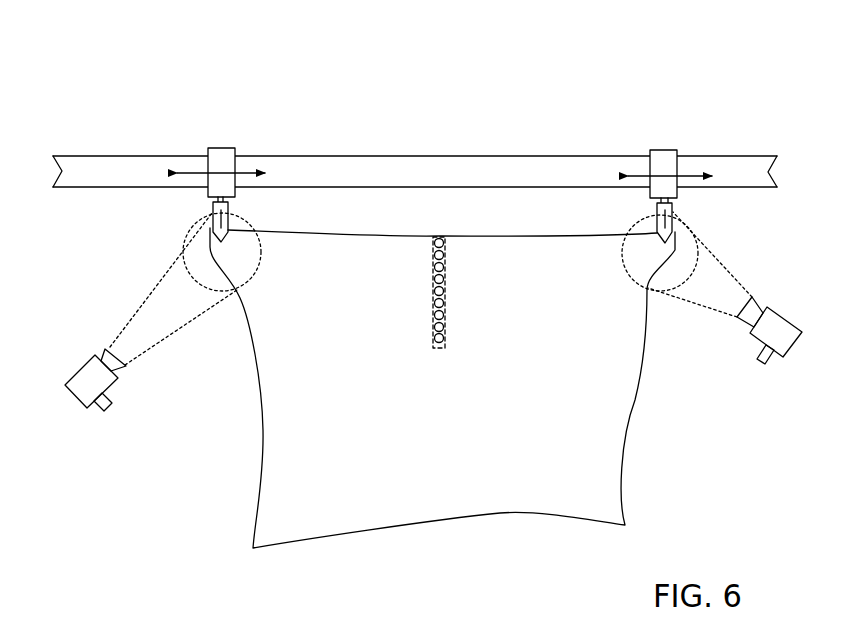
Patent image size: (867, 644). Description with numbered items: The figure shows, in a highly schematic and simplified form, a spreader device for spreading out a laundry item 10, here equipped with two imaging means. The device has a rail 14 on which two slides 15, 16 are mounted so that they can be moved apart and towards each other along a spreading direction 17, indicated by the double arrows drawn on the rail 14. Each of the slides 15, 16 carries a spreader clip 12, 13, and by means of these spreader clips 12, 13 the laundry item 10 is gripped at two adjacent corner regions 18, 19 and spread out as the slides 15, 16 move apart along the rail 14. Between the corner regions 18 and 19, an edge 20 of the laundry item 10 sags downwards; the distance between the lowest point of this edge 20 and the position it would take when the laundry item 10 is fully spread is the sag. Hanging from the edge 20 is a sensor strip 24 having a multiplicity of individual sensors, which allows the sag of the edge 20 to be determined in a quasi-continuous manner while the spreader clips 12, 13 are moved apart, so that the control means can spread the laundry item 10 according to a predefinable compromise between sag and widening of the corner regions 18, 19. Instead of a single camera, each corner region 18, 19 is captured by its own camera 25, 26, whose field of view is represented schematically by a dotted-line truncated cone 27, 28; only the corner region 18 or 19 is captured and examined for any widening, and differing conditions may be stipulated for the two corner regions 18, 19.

The laundry item 10 is at (380, 488).
The spreader clip 12 is at (670, 217).
The spreader clip 13 is at (220, 223).
The rail 14 is at (72, 168).
The slide 15 is at (660, 152).
The slide 16 is at (237, 153).
The spreading direction 17 is at (188, 172).
The corner region 18 is at (233, 257).
The corner region 19 is at (648, 257).
The edge 20 is at (322, 232).
The sensor strip 24 is at (438, 237).
The camera 25 is at (82, 391).
The camera 26 is at (767, 330).
The truncated cone 27 is at (203, 313).
The truncated cone 28 is at (678, 303).